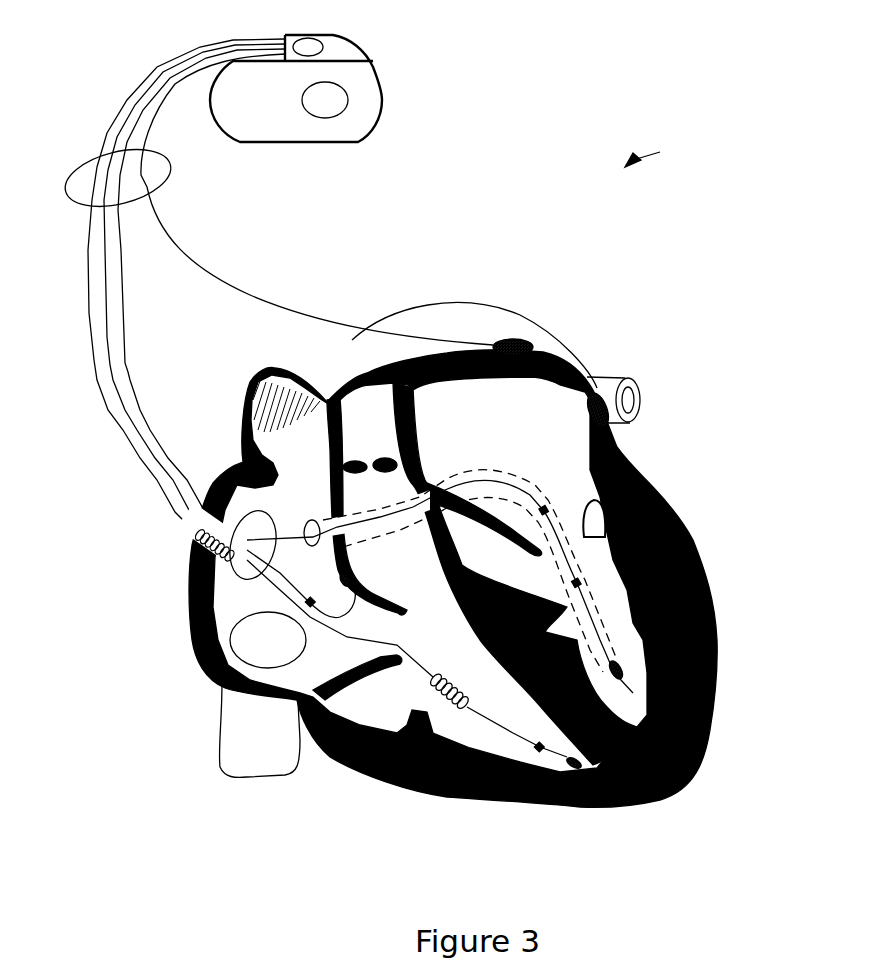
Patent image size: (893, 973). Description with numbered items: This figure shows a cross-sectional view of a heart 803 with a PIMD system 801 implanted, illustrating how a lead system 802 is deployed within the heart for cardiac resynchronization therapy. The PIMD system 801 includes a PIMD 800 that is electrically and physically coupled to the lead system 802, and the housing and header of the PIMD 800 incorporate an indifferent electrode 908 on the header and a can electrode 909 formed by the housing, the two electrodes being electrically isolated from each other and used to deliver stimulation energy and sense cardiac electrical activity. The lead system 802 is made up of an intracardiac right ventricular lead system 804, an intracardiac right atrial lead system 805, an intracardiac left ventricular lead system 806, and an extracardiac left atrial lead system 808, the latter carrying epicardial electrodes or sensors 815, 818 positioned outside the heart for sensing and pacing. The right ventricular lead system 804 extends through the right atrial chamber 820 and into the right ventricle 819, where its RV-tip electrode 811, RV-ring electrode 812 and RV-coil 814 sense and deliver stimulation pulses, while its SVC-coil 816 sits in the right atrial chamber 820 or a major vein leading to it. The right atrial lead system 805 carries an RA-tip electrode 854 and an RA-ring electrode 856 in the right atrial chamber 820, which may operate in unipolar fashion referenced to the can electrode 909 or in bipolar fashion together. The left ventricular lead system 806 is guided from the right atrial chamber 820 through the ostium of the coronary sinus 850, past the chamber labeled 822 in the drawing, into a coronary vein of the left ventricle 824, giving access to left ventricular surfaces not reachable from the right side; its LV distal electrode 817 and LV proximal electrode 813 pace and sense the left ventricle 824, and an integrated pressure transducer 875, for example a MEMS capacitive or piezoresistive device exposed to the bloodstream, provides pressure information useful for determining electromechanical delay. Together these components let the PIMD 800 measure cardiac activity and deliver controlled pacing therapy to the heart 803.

The PIMD 800 is at (337, 34).
The PIMD system 801 is at (660, 157).
The lead system 802 is at (88, 165).
The heart 803 is at (673, 540).
The right ventricular lead system 804 is at (90, 313).
The right atrial lead system 805 is at (107, 337).
The left ventricular lead system 806 is at (127, 370).
The extracardiac left atrial lead system 808 is at (210, 280).
The RV-tip electrode 811 is at (537, 748).
The RV-ring electrode 812 is at (557, 740).
The LV proximal electrode 813 is at (630, 685).
The RV-coil 814 is at (433, 683).
The epicardial electrode 815 is at (503, 340).
The SVC-coil 816 is at (197, 540).
The LV distal electrode 817 is at (580, 583).
The epicardial electrode 818 is at (597, 390).
The right ventricle 819 is at (448, 637).
The right atrial chamber 820 is at (257, 607).
The left atrium 822 is at (515, 417).
The left ventricle 824 is at (541, 591).
The coronary sinus 850 is at (318, 520).
The RA-tip electrode 854 is at (330, 588).
The RA-ring electrode 856 is at (345, 578).
The pressure transducer 875 is at (567, 480).
The indifferent electrode 908 is at (300, 42).
The can electrode 909 is at (347, 100).